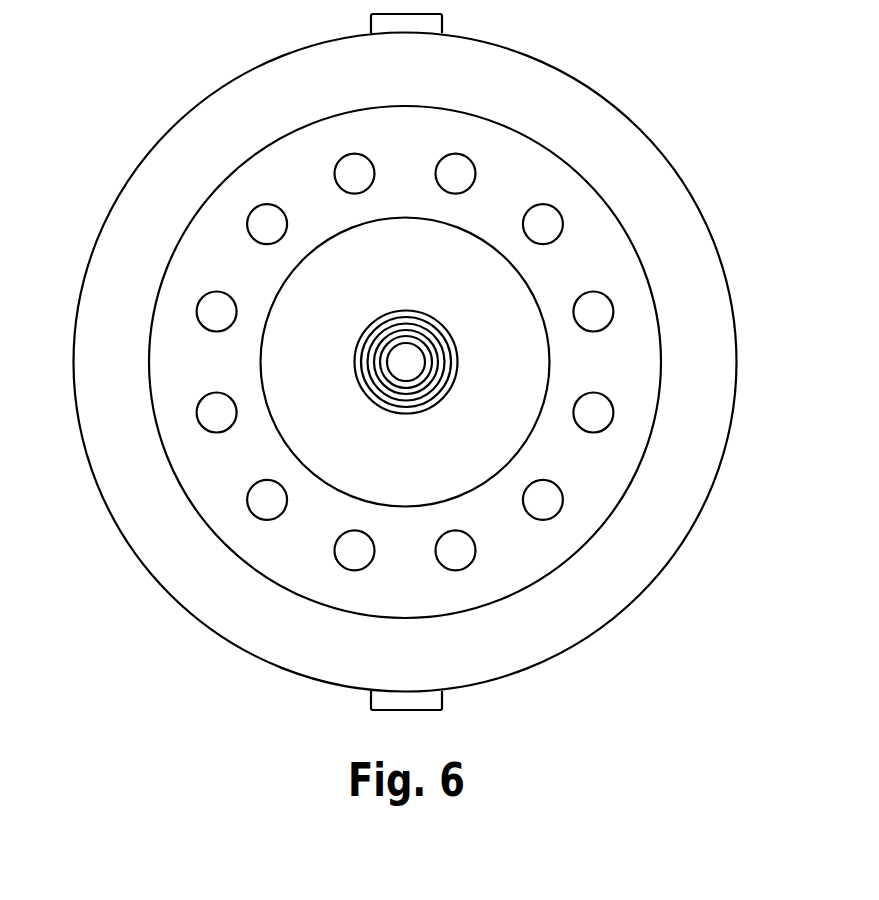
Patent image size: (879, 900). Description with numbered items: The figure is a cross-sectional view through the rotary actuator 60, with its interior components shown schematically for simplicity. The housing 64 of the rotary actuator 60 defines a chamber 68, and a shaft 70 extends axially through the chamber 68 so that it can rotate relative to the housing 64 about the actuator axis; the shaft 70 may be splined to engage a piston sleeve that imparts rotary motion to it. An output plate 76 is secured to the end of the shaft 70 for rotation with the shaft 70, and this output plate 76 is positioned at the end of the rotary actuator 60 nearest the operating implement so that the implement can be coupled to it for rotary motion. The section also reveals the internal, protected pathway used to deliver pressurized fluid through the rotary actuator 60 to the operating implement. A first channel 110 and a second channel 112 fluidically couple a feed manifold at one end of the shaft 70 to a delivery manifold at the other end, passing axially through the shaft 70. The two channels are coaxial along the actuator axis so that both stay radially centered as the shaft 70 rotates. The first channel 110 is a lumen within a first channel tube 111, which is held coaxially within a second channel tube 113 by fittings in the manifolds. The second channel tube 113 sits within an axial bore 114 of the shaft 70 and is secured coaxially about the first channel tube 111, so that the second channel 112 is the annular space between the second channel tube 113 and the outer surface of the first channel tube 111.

The rotary actuator 60 is at (105, 128).
The housing 64 is at (190, 575).
The chamber 68 is at (630, 339).
The shaft 70 is at (502, 427).
The output plate 76 is at (503, 153).
The first channel 110 is at (407, 352).
The first channel tube 111 is at (425, 367).
The second channel 112 is at (377, 360).
The second channel tube 113 is at (375, 392).
The axial bore 114 is at (408, 412).